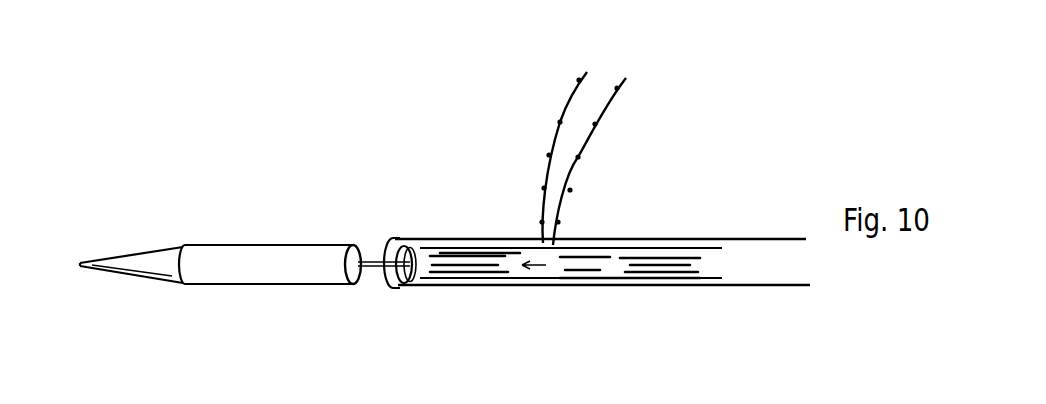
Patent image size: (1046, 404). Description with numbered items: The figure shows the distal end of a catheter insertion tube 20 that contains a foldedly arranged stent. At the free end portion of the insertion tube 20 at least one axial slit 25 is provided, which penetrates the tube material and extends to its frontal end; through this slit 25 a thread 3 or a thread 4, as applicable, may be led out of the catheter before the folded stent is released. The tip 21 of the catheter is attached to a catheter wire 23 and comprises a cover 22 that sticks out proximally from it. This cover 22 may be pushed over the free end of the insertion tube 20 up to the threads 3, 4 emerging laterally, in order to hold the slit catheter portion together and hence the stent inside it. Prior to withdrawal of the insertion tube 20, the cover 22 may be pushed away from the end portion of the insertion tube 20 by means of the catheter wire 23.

The thread 3 is at (558, 127).
The thread 4 is at (590, 137).
The catheter insertion tube 20 is at (447, 287).
The tip 21 is at (142, 263).
The cover 22 is at (247, 270).
The catheter wire 23 is at (378, 270).
The axial slit 25 is at (403, 238).